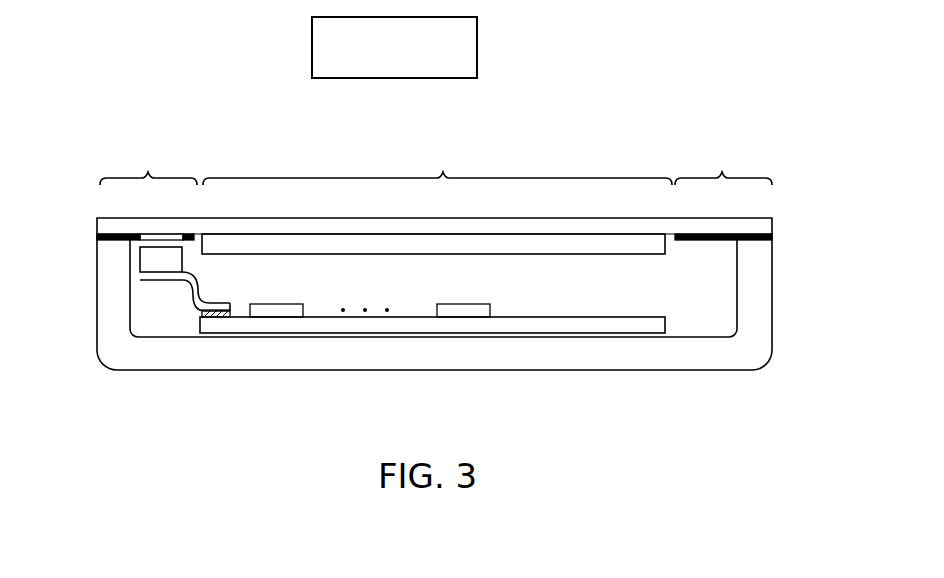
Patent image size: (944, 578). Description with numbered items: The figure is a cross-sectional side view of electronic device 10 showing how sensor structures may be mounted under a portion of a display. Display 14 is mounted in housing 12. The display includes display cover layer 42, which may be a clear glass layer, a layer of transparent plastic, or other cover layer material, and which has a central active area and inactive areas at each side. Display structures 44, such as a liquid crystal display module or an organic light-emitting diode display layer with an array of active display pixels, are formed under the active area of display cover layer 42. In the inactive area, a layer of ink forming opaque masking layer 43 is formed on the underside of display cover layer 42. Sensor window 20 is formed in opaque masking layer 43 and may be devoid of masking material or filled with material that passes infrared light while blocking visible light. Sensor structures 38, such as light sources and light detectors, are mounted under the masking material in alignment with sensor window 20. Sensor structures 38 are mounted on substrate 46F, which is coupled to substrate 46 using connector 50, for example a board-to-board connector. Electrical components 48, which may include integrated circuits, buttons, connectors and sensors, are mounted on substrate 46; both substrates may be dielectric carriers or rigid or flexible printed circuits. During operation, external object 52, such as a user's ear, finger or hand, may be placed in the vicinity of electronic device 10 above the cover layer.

The electronic device 10 is at (450, 249).
The housing 12 is at (763, 292).
The display 14 is at (434, 171).
The sensor window 20 is at (150, 236).
The sensor structures 38 is at (147, 258).
The display cover layer 42 is at (593, 230).
The opaque masking layer 43 is at (97, 238).
The display structures 44 is at (388, 247).
The substrate 46 is at (595, 326).
The substrate 46F is at (187, 280).
The components 48 is at (452, 308).
The connector 50 is at (201, 312).
The external object 52 is at (477, 43).